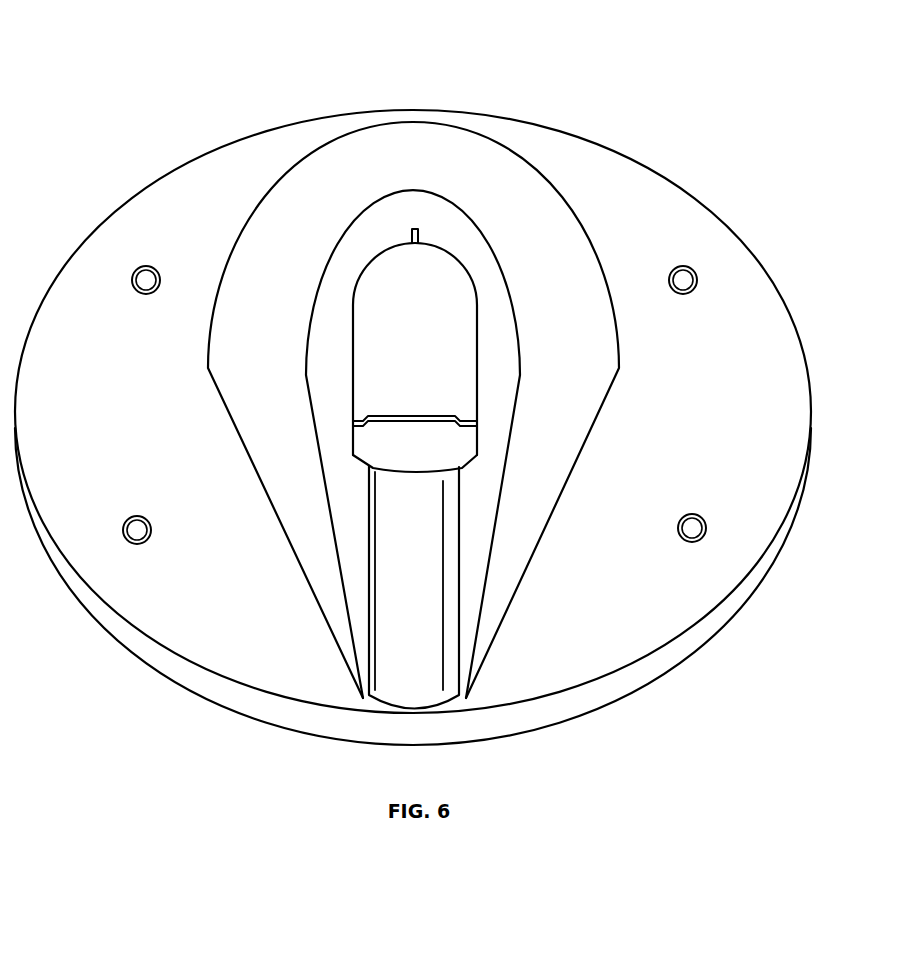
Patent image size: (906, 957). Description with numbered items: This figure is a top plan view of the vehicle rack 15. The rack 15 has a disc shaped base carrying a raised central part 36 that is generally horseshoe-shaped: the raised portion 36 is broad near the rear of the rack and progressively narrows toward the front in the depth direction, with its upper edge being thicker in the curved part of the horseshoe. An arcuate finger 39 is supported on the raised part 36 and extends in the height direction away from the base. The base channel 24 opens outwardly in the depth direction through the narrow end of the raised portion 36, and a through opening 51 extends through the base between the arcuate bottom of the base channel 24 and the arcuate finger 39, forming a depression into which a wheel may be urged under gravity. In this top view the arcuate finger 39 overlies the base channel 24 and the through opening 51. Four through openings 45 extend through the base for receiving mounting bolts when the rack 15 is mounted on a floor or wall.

The rack 15 is at (395, 60).
The raised central part 36 is at (548, 235).
The arcuate finger 39 is at (435, 303).
The through opening 51 is at (443, 450).
The base channel 24 is at (422, 672).
The through openings 45 is at (145, 272).